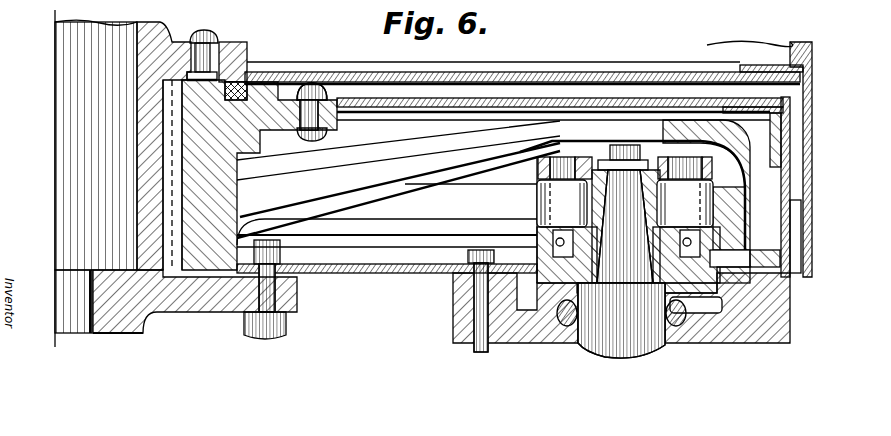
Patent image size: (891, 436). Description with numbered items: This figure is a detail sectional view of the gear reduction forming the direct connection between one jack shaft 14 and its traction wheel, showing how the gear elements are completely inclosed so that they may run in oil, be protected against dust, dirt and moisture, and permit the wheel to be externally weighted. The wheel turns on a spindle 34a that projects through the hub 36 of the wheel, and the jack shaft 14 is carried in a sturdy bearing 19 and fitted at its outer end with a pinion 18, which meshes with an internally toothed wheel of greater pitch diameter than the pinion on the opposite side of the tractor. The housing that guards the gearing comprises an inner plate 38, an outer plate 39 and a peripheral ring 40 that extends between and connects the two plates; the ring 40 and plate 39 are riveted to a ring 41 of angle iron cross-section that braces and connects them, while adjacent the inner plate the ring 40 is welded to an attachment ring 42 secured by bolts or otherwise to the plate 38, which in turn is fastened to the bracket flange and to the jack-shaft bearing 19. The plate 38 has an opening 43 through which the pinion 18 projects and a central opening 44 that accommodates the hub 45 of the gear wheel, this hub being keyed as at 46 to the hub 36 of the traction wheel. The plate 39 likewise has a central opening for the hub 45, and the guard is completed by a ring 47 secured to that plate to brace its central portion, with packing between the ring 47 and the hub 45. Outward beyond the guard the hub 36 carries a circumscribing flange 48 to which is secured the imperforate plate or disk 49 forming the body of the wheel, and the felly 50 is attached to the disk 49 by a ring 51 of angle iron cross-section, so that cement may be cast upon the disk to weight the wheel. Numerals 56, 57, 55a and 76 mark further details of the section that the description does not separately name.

The hub 36 is at (157, 5).
The spindle 34a is at (60, 282).
The key 46 is at (162, 143).
The bolt 56 is at (190, 45).
The circumscribing flange 48 is at (247, 44).
The hub of the gear wheel 45 is at (218, 210).
The ring 47 is at (287, 108).
The plate or disk 49 is at (503, 72).
The ring of angle iron cross-section 51 is at (757, 63).
The felly 50 is at (813, 97).
The outer plate 39 is at (553, 97).
The ring of angle iron cross-section 41 is at (773, 137).
The peripheral ring 40 is at (790, 200).
The attachment ring 42 is at (792, 244).
The opening 43 is at (727, 275).
The bearing 19 is at (452, 311).
The pinion 18 is at (533, 297).
The jack shaft 14 is at (597, 345).
The inner plate 38 is at (355, 275).
The central opening 44 is at (247, 273).
The bottom block 57 is at (173, 312).
The foot 55a is at (112, 327).
The blade 76 is at (407, 165).